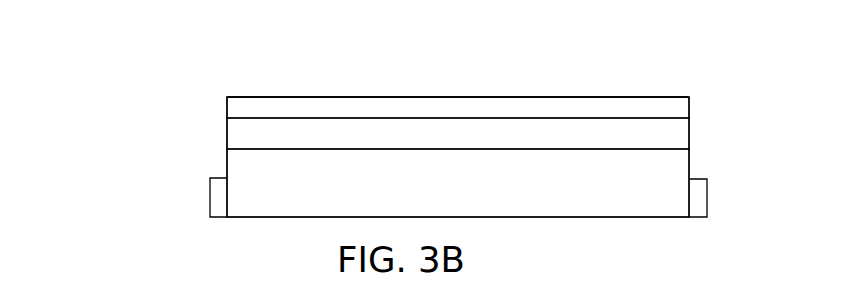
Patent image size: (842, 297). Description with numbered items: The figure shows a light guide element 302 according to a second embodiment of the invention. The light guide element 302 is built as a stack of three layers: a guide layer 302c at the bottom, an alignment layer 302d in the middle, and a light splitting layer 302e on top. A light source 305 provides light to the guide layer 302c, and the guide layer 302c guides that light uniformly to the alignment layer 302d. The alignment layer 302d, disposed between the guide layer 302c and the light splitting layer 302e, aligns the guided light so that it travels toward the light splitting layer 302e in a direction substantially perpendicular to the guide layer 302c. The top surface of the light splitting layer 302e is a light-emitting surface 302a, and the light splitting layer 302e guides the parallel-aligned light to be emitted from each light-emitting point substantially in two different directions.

The light guide element 302 is at (125, 58).
The light-emitting surface 302a is at (252, 97).
The light splitting layer 302e is at (232, 105).
The alignment layer 302d is at (234, 138).
The guide layer 302c is at (237, 163).
The light source 305 is at (217, 202).